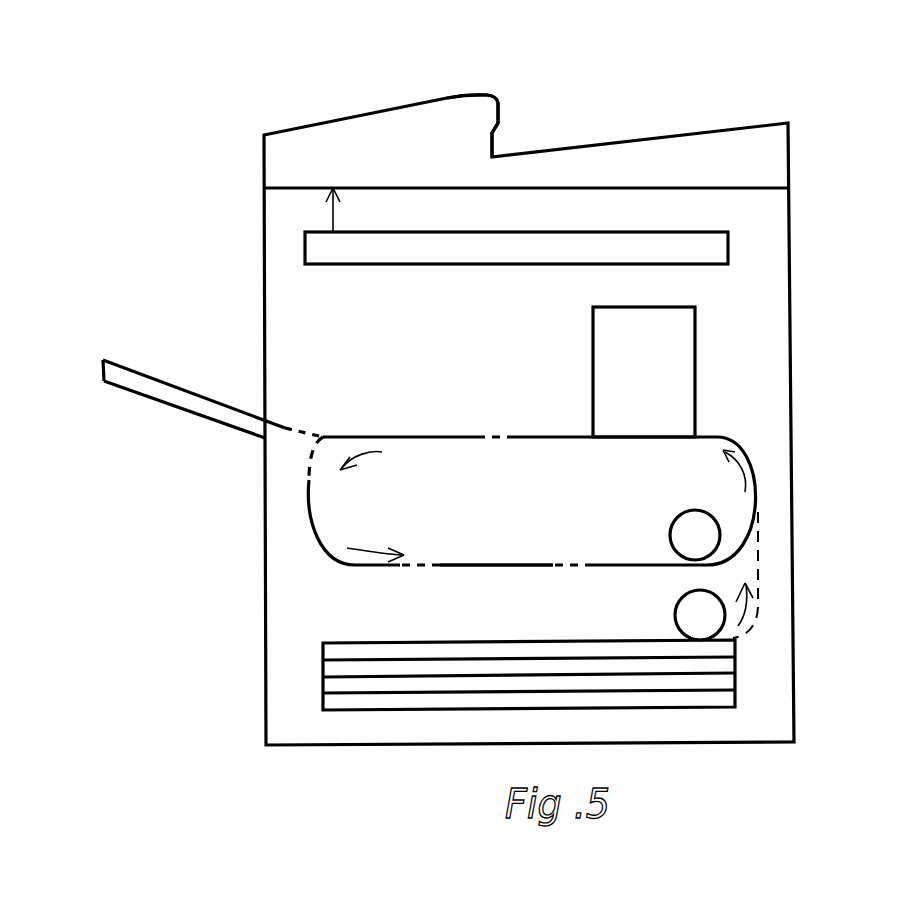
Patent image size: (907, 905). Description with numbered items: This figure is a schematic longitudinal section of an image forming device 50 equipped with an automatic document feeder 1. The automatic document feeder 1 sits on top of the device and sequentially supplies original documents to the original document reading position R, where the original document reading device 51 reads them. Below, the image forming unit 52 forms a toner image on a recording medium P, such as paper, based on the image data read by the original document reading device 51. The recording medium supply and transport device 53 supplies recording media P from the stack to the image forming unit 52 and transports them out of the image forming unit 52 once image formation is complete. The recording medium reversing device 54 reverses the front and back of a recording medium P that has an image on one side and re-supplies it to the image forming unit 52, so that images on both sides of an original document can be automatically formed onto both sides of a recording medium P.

The automatic document feeder 1 is at (447, 97).
The image forming device 50 is at (791, 263).
The original document reading device 51 is at (554, 231).
The image forming unit 52 is at (695, 385).
The recording medium supply and transport device 53 is at (758, 493).
The recording medium reversing device 54 is at (428, 565).
The original document reading position R is at (348, 210).
The recording medium P is at (490, 643).